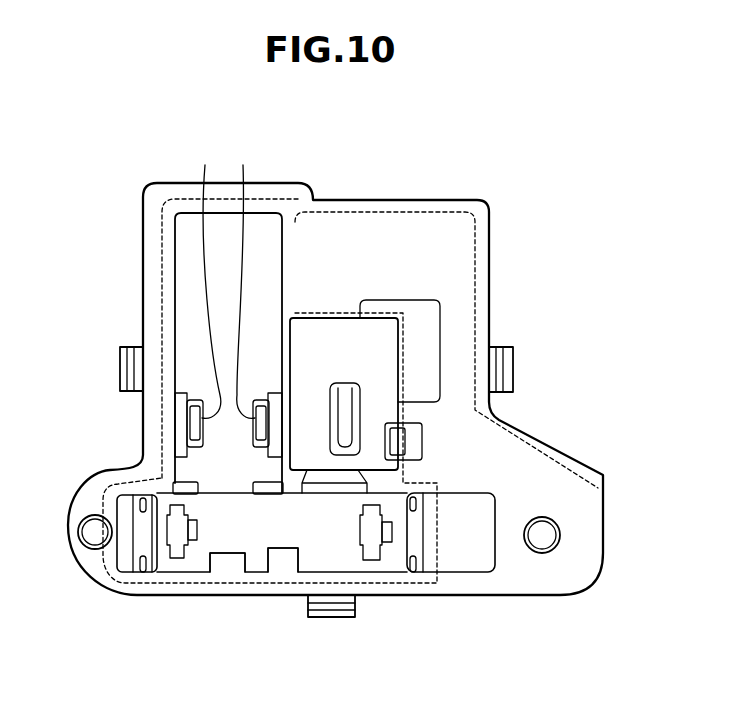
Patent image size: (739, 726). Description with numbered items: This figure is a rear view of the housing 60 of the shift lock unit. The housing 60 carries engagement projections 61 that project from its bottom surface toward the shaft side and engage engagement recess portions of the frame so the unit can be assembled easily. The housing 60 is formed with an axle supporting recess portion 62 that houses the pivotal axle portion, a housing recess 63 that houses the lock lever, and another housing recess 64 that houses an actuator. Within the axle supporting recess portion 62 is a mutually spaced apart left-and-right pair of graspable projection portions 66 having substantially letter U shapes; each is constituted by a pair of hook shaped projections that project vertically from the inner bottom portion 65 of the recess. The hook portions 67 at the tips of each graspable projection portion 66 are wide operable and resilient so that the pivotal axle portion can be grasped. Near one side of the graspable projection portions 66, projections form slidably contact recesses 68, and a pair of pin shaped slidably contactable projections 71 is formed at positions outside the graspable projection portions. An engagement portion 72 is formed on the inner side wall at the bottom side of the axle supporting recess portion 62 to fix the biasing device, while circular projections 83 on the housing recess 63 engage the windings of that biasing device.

The housing 60 is at (407, 200).
The engagement projections 61 is at (120, 366).
The axle supporting recess portion 62 is at (494, 500).
The housing recess 63 is at (184, 262).
The housing recess 64 is at (390, 336).
The inner bottom portion 65 is at (305, 556).
The graspable projection portions 66 is at (162, 570).
The hook portions 67 is at (172, 505).
The slidably contact recesses 68 is at (180, 505).
The slidably contactable projections 71 is at (140, 503).
The engagement portion 72 is at (233, 560).
The circular projections 83 is at (224, 279).